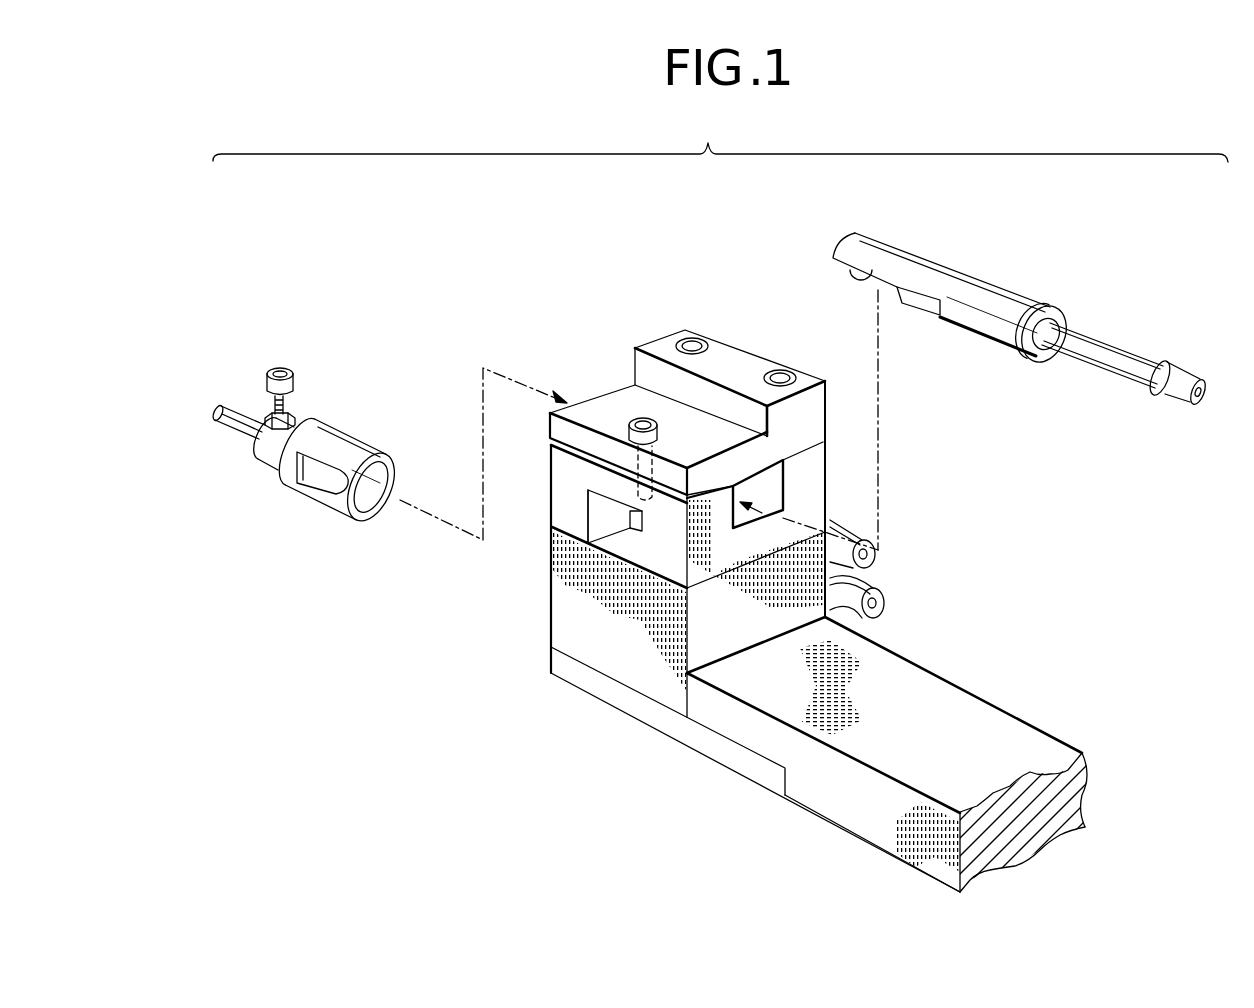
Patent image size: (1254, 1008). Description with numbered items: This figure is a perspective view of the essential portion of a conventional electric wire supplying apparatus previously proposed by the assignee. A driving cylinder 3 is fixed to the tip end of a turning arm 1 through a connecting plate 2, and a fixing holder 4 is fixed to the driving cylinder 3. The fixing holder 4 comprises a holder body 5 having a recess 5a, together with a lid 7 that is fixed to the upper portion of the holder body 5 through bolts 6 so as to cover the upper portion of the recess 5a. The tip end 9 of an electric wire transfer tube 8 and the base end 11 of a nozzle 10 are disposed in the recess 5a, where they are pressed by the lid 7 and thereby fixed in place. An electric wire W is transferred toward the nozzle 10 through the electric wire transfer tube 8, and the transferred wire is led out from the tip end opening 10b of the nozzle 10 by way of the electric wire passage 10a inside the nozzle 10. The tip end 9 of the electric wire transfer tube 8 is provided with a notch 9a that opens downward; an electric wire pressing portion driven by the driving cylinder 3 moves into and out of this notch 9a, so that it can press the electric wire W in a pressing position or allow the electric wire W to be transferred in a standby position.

The turning arm 1 is at (905, 690).
The connecting plate 2 is at (657, 718).
The driving cylinder 3 is at (613, 642).
The fixing holder 4 is at (787, 227).
The holder body 5 is at (830, 422).
The recess 5a is at (767, 480).
The bolts 6 is at (692, 346).
The lid 7 is at (720, 352).
The electric wire transfer tube 8 is at (1119, 330).
The tip end of electric wire transfer tube 9 is at (953, 289).
The notch 9a is at (880, 275).
The nozzle 10 is at (292, 464).
The electric wire passage 10a is at (363, 505).
The tip end opening 10b is at (210, 412).
The base end of nozzle 11 is at (355, 440).
The electric wire W is at (1177, 392).